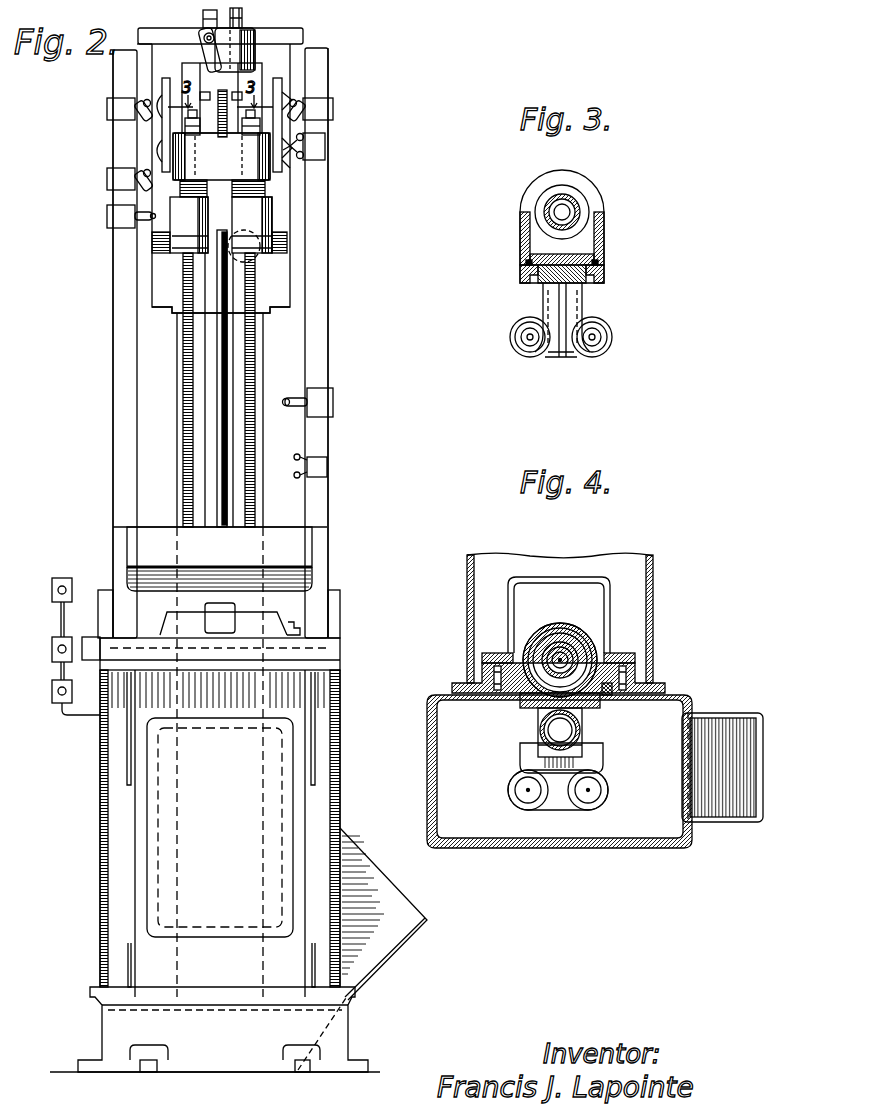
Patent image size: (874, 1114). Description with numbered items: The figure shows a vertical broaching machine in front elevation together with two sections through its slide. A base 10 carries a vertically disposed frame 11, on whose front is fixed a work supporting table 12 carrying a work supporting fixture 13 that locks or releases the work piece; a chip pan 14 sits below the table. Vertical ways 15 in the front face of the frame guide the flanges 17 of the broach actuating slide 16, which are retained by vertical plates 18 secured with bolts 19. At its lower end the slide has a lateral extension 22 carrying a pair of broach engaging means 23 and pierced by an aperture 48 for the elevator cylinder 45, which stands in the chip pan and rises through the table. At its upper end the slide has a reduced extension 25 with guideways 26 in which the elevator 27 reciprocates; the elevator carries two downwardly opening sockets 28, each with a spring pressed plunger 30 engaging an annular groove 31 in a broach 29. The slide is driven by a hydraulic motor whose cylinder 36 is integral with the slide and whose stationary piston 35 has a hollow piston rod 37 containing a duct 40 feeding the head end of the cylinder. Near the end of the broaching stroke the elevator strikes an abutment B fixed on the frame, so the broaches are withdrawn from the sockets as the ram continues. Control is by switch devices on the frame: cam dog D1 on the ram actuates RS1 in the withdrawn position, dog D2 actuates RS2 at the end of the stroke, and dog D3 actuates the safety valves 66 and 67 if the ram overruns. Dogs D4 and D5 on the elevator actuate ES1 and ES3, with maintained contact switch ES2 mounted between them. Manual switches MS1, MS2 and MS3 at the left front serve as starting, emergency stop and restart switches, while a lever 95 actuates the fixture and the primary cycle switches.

In FIG. 2, the dog D4 is at (163, 92).
In FIG. 2, the cam dog D1 is at (288, 100).
In FIG. 2, the dog D5 is at (157, 145).
In FIG. 2, the dog D2 is at (305, 157).
In FIG. 2, the dog D3 is at (292, 165).
In FIG. 2, the switch device ES1 is at (120, 113).
In FIG. 2, the switch device ES2 is at (120, 182).
In FIG. 2, the switch device ES3 is at (120, 217).
In FIG. 2, the switch device RS1 is at (320, 108).
In FIG. 2, the switch device RS2 is at (320, 403).
In FIG. 2, the safety valve 67 is at (314, 143).
In FIG. 2, the safety valve 66 is at (318, 466).
In FIG. 2, the elevator 27 is at (207, 95).
In FIG. 3, the elevator 27 is at (572, 284).
In FIG. 2, the spring pressed plunger 30 is at (275, 232).
In FIG. 2, the annular groove 31 is at (250, 265).
In FIG. 2, the broach 29 is at (250, 385).
In FIG. 2, the extension 25 is at (262, 298).
In FIG. 3, the extension 25 is at (603, 258).
In FIG. 2, the vertical plate 18 is at (292, 352).
In FIG. 4, the vertical plate 18 is at (520, 705).
In FIG. 2, the abutment B is at (293, 553).
In FIG. 2, the work supporting fixture 13 is at (216, 603).
In FIG. 2, the lever 95 is at (300, 633).
In FIG. 2, the work supporting table 12 is at (325, 652).
In FIG. 2, the starting switch MS1 is at (62, 578).
In FIG. 2, the emergency stop switch MS2 is at (54, 655).
In FIG. 2, the special starting switch MS3 is at (60, 705).
In FIG. 2, the chip pan 14 is at (327, 792).
In FIG. 2, the base 10 is at (362, 1028).
In FIG. 4, the base 10 is at (437, 790).
In FIG. 3, the duct 40 is at (552, 206).
In FIG. 4, the duct 40 is at (570, 660).
In FIG. 3, the piston rod 37 is at (583, 207).
In FIG. 4, the piston rod 37 is at (540, 650).
In FIG. 3, the guideways 26 is at (528, 273).
In FIG. 3, the socket 28 is at (591, 352).
In FIG. 4, the frame 11 is at (655, 570).
In FIG. 4, the cylinder 36 is at (560, 633).
In FIG. 4, the piston 35 is at (576, 644).
In FIG. 4, the vertical ways 15 is at (482, 667).
In FIG. 4, the bolt 19 is at (452, 685).
In FIG. 4, the flange 17 is at (497, 692).
In FIG. 4, the slide 16 is at (607, 698).
In FIG. 4, the aperture 48 is at (540, 733).
In FIG. 4, the lateral extension 22 is at (593, 758).
In FIG. 4, the cylinder 45 is at (550, 750).
In FIG. 4, the broach engaging means 23 is at (586, 806).